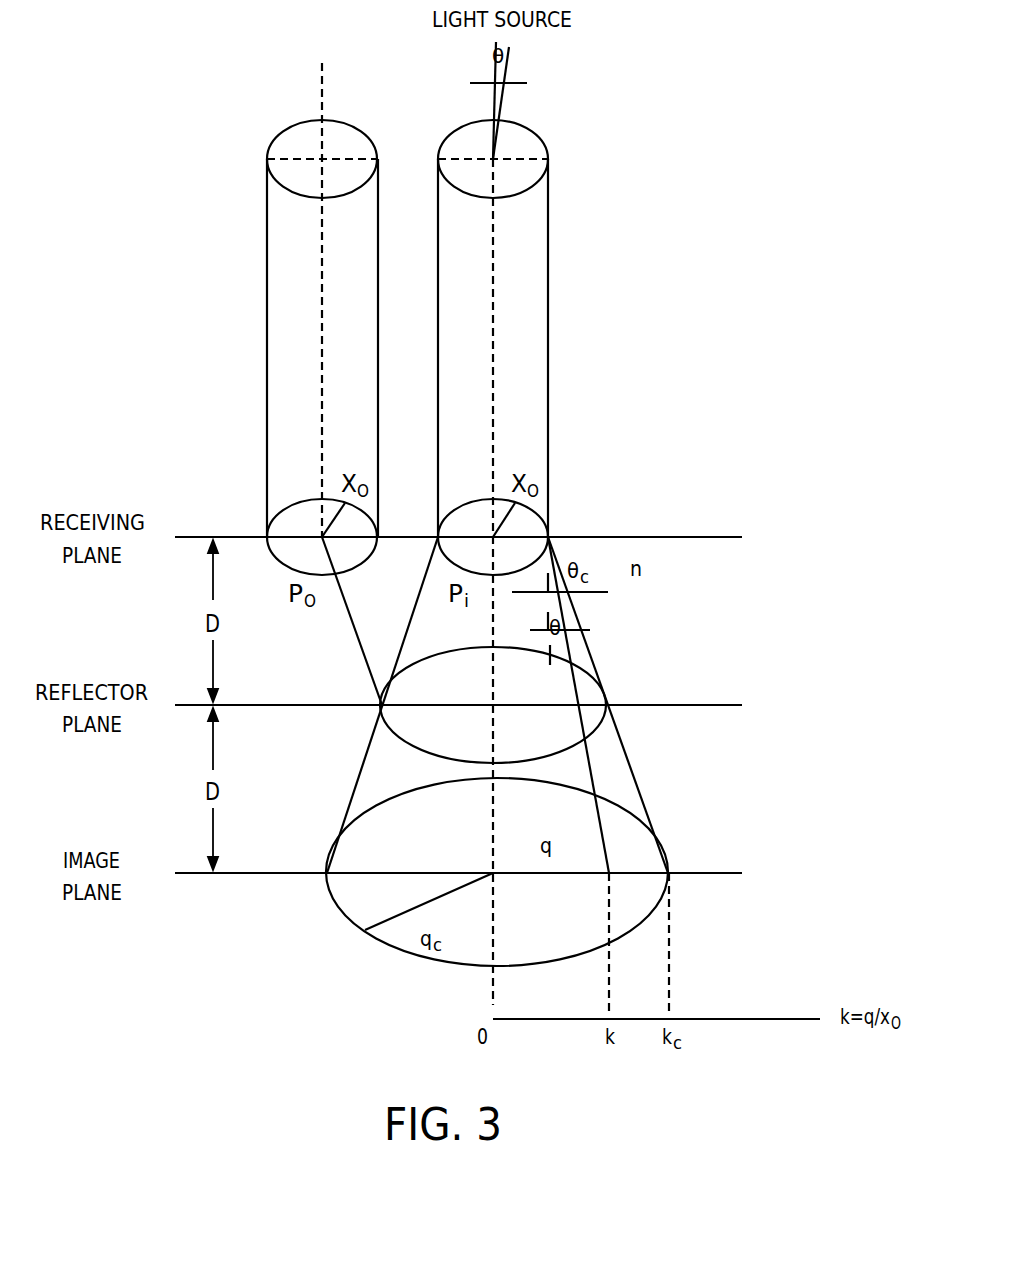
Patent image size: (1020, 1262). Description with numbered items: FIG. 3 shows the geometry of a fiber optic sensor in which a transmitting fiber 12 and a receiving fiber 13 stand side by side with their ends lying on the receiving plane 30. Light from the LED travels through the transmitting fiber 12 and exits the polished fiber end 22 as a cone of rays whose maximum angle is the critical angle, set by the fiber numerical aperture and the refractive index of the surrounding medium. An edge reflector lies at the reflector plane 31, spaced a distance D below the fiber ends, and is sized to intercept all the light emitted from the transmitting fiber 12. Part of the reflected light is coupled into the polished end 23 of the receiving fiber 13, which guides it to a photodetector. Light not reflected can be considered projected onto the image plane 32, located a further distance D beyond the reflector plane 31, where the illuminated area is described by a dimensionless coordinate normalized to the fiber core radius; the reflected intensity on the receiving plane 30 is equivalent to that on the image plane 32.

The transmitting fiber 12 is at (536, 263).
The receiving fiber 13 is at (282, 263).
The polished fiber end 22 is at (548, 537).
The polished end of the receiving fiber 23 is at (268, 537).
The receiving plane 30 is at (715, 540).
The reflector plane 31 is at (715, 708).
The image plane 32 is at (715, 876).